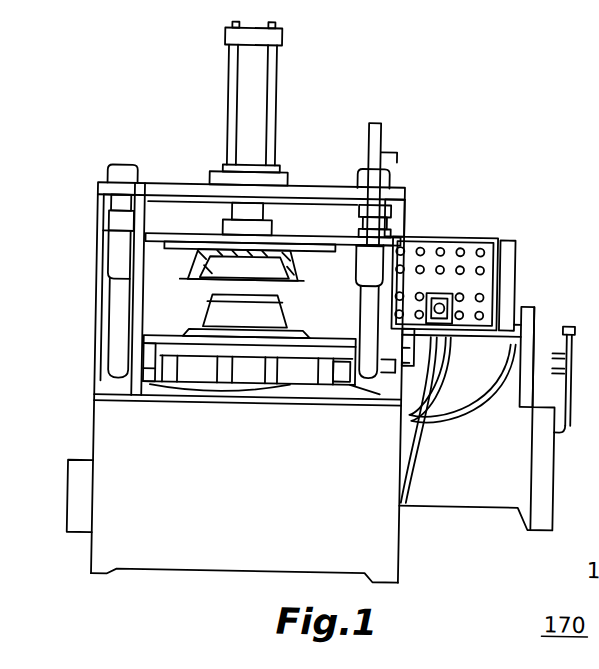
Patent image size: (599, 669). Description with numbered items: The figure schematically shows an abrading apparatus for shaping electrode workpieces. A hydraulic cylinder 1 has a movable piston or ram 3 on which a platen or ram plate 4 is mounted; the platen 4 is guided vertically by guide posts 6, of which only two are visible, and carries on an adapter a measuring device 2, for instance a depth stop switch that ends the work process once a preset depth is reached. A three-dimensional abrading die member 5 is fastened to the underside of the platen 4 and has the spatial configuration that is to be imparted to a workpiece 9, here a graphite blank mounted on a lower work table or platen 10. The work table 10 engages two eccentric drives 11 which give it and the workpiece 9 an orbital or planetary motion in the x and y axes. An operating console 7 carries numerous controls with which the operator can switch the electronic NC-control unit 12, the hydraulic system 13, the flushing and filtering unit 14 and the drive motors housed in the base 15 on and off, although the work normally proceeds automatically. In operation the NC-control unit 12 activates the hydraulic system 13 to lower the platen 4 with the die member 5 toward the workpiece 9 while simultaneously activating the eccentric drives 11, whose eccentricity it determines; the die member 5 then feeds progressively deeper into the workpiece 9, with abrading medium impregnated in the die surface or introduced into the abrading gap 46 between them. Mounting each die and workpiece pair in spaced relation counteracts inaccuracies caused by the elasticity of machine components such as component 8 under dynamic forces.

The hydraulic cylinder 1 is at (253, 102).
The measuring device 2 is at (377, 152).
The ram 3 is at (237, 208).
The platen 4 is at (222, 237).
The abrading die member 5 is at (256, 257).
The abrading gap 46 is at (271, 287).
The guide posts 6 is at (365, 263).
The operating console 7 is at (450, 266).
The machine component 8 is at (118, 304).
The workpiece 9 is at (228, 312).
The work table 10 is at (150, 349).
The eccentric drives 11 is at (187, 380).
The electronic NC-control unit 12 is at (485, 353).
The hydraulic system 13 is at (536, 476).
The flushing and filtering unit 14 is at (82, 480).
The base 15 is at (172, 562).